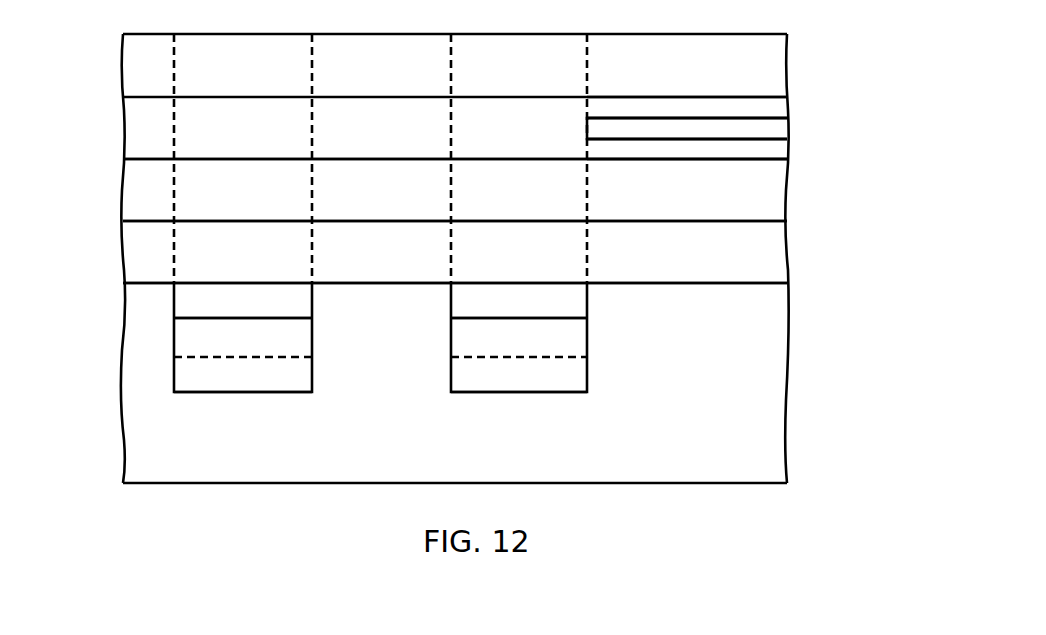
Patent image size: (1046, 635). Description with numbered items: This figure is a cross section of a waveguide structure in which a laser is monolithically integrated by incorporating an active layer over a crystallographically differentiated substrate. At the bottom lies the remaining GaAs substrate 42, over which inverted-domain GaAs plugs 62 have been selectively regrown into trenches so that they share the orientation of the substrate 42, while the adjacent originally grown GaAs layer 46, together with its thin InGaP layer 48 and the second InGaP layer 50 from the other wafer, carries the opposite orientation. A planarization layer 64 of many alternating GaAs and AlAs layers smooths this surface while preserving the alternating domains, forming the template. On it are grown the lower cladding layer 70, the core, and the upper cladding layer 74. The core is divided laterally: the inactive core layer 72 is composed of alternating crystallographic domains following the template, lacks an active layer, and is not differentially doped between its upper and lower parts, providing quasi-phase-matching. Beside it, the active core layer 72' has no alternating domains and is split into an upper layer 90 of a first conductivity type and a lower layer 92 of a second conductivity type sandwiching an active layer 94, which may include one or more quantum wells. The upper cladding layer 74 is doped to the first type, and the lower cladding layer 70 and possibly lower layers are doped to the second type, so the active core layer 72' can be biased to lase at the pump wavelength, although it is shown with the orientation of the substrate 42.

The upper cladding layer 74 is at (133, 65).
The inactive core layer 72 is at (411, 132).
The active core layer 72' is at (752, 128).
The upper layer 90 is at (768, 102).
The active layer 94 is at (768, 124).
The lower layer 92 is at (768, 145).
The lower cladding layer 70 is at (133, 191).
The planarization layer 64 is at (133, 251).
The GaAs layer 46 is at (180, 298).
The In0.5Ga0.5P layer 48 is at (180, 333).
The second In0.5Ga0.5P layer 50 is at (180, 372).
The inverted-domain GaAs plug 62 is at (128, 381).
The GaAs substrate 42 is at (133, 453).